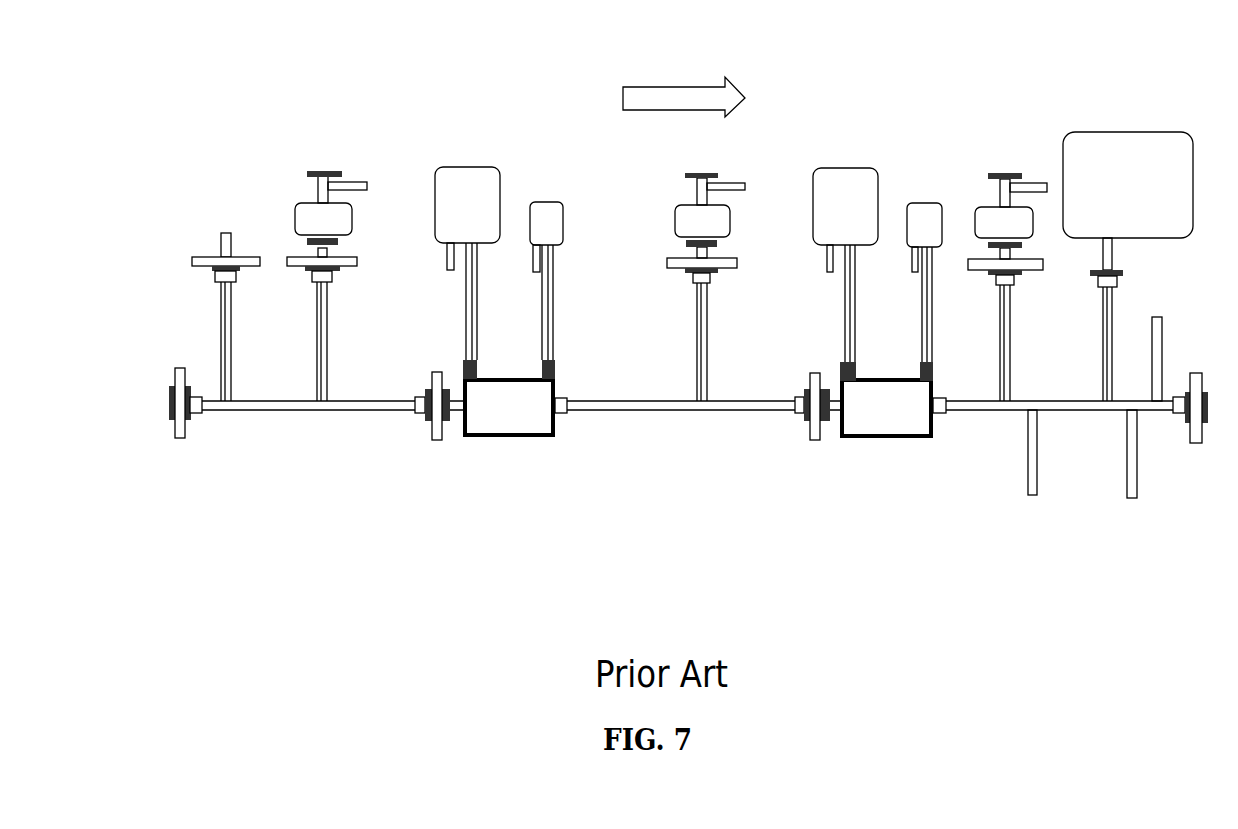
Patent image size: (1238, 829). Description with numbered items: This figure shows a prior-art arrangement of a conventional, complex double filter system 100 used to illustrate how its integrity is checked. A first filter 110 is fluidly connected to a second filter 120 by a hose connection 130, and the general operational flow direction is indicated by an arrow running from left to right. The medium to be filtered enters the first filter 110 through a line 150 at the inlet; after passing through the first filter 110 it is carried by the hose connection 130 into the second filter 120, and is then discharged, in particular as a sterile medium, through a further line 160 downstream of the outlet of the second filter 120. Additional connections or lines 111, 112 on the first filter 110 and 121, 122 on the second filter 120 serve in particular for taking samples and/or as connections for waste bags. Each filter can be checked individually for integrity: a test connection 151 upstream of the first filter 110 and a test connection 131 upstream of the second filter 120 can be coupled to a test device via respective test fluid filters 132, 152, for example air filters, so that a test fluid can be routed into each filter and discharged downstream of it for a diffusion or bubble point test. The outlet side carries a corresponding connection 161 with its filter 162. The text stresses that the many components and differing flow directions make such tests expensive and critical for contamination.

The double filter system 100 is at (653, 283).
The first filter 110 is at (502, 437).
The additional connection 111 is at (465, 348).
The additional connection 112 is at (553, 330).
The second filter 120 is at (877, 438).
The additional connection 121 is at (845, 323).
The additional connection 122 is at (923, 333).
The hose connection 130 is at (678, 412).
The test connection 131 is at (697, 338).
The test fluid filter 132 is at (664, 184).
The line 150 is at (328, 412).
The test connection 151 is at (318, 353).
The test fluid filter 152 is at (287, 186).
The further line 160 is at (985, 412).
The support pole 161 is at (1007, 373).
The valve assembly 162 is at (969, 176).